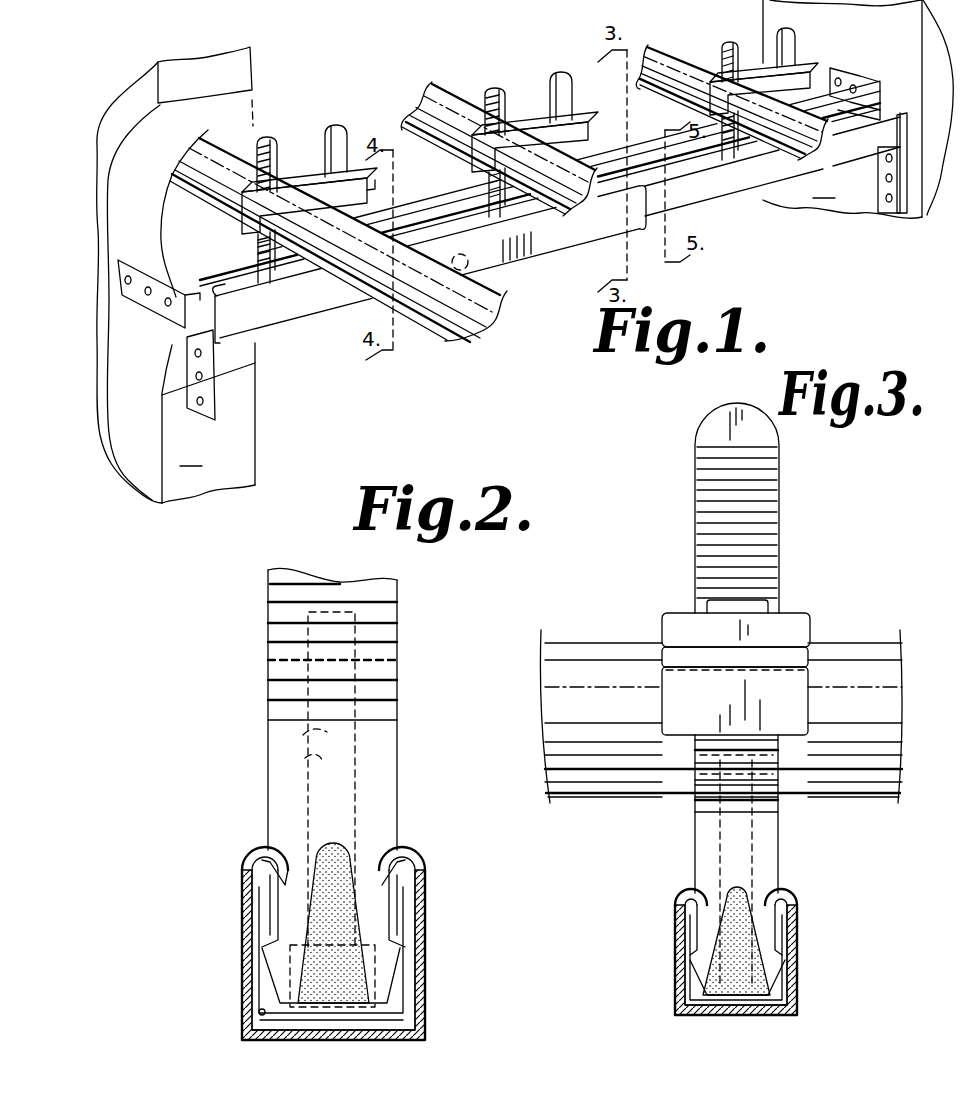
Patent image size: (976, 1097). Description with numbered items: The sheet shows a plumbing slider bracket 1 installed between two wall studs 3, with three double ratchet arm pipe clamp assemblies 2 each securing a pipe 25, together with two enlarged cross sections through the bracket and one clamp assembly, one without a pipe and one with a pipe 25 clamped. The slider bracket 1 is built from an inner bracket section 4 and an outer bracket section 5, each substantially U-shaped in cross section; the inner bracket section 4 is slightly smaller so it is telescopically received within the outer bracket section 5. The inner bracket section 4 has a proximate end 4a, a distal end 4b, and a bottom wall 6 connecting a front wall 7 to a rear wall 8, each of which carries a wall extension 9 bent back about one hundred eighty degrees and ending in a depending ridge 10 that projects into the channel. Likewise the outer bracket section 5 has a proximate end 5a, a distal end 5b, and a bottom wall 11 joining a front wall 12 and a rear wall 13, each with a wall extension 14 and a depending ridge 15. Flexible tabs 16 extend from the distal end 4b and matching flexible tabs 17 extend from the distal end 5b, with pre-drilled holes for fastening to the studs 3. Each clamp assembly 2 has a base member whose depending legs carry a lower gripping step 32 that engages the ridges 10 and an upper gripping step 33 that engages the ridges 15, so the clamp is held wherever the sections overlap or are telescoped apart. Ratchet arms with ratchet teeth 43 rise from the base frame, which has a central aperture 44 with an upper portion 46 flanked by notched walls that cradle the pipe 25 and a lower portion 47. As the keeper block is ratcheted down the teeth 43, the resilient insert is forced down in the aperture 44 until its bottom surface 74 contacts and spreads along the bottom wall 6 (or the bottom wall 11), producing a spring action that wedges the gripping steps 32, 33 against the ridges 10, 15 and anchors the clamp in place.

In FIG. 1, the plumbing slider bracket 1 is at (522, 302).
In FIG. 1, the double ratchet arm pipe clamp assembly 2 is at (745, 22).
In FIG. 1, the wall stud 3 is at (525, 251).
In FIG. 1, the inner bracket section 4 is at (758, 190).
In FIG. 1, the proximate end 4a is at (500, 278).
In FIG. 1, the distal end 4b is at (912, 122).
In FIG. 1, the outer bracket section 5 is at (312, 312).
In FIG. 1, the proximate end 5a is at (578, 168).
In FIG. 1, the distal end 5b is at (214, 322).
In FIG. 2, the bottom wall 6 is at (264, 1015).
In FIG. 2, the front wall 7 is at (258, 950).
In FIG. 2, the rear wall 8 is at (410, 928).
In FIG. 2, the wall extension 9 is at (262, 866).
In FIG. 2, the depending ridge 10 is at (270, 924).
In FIG. 2, the bottom wall 11 is at (415, 1033).
In FIG. 2, the front wall 12 is at (246, 992).
In FIG. 2, the rear wall 13 is at (428, 998).
In FIG. 2, the wall extension 14 is at (400, 852).
In FIG. 2, the depending ridge 15 is at (385, 875).
In FIG. 1, the flexible tab 16 is at (860, 56).
In FIG. 1, the flexible tab 17 is at (255, 402).
In FIG. 1, the pipe 25 is at (440, 100).
In FIG. 3, the pipe 25 is at (588, 645).
In FIG. 2, the lower gripping step 32 is at (398, 972).
In FIG. 2, the upper gripping step 33 is at (240, 880).
In FIG. 3, the ratchet teeth 43 is at (696, 515).
In FIG. 2, the central aperture 44 is at (305, 758).
In FIG. 2, the upper portion 46 is at (303, 735).
In FIG. 2, the lower portion 47 is at (264, 1043).
In FIG. 2, the bottom surface 74 is at (330, 1010).
In FIG. 3, the bottom surface 74 is at (727, 1005).